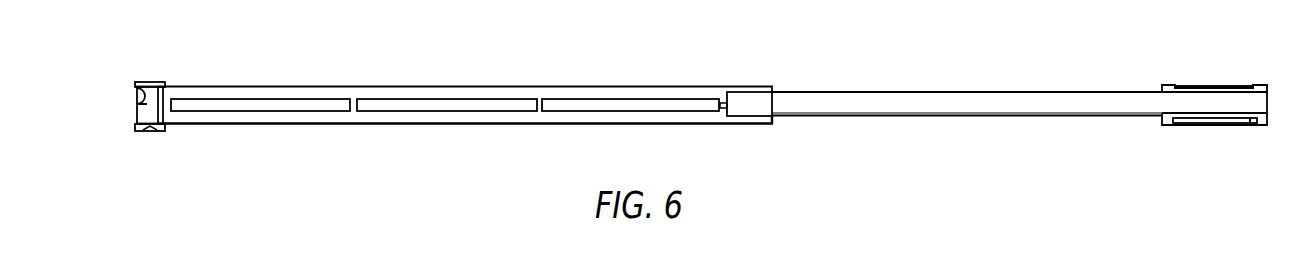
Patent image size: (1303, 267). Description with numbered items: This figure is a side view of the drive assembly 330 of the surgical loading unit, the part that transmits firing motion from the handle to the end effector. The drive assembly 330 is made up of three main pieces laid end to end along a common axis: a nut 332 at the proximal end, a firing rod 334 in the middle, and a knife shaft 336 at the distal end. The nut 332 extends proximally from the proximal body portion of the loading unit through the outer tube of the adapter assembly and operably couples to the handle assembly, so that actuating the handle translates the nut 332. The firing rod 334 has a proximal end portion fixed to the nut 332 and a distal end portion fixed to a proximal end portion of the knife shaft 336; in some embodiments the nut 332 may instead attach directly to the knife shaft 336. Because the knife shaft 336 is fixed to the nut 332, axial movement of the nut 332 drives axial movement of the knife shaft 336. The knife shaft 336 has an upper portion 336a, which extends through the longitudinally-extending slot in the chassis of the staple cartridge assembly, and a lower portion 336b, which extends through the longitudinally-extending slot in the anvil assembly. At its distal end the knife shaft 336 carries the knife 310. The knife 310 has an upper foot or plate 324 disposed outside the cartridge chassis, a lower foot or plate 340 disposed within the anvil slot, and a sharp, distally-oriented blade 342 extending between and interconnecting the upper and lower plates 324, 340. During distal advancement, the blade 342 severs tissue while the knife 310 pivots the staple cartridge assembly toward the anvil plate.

The knife 310 is at (133, 74).
The upper foot or plate 324 is at (153, 81).
The blade 342 is at (140, 115).
The lower foot or plate 340 is at (147, 132).
The knife shaft 336 is at (483, 114).
The upper portion 336a is at (498, 95).
The lower portion 336b is at (700, 115).
The drive assembly 330 is at (742, 65).
The firing rod 334 is at (938, 123).
The nut 332 is at (1215, 77).